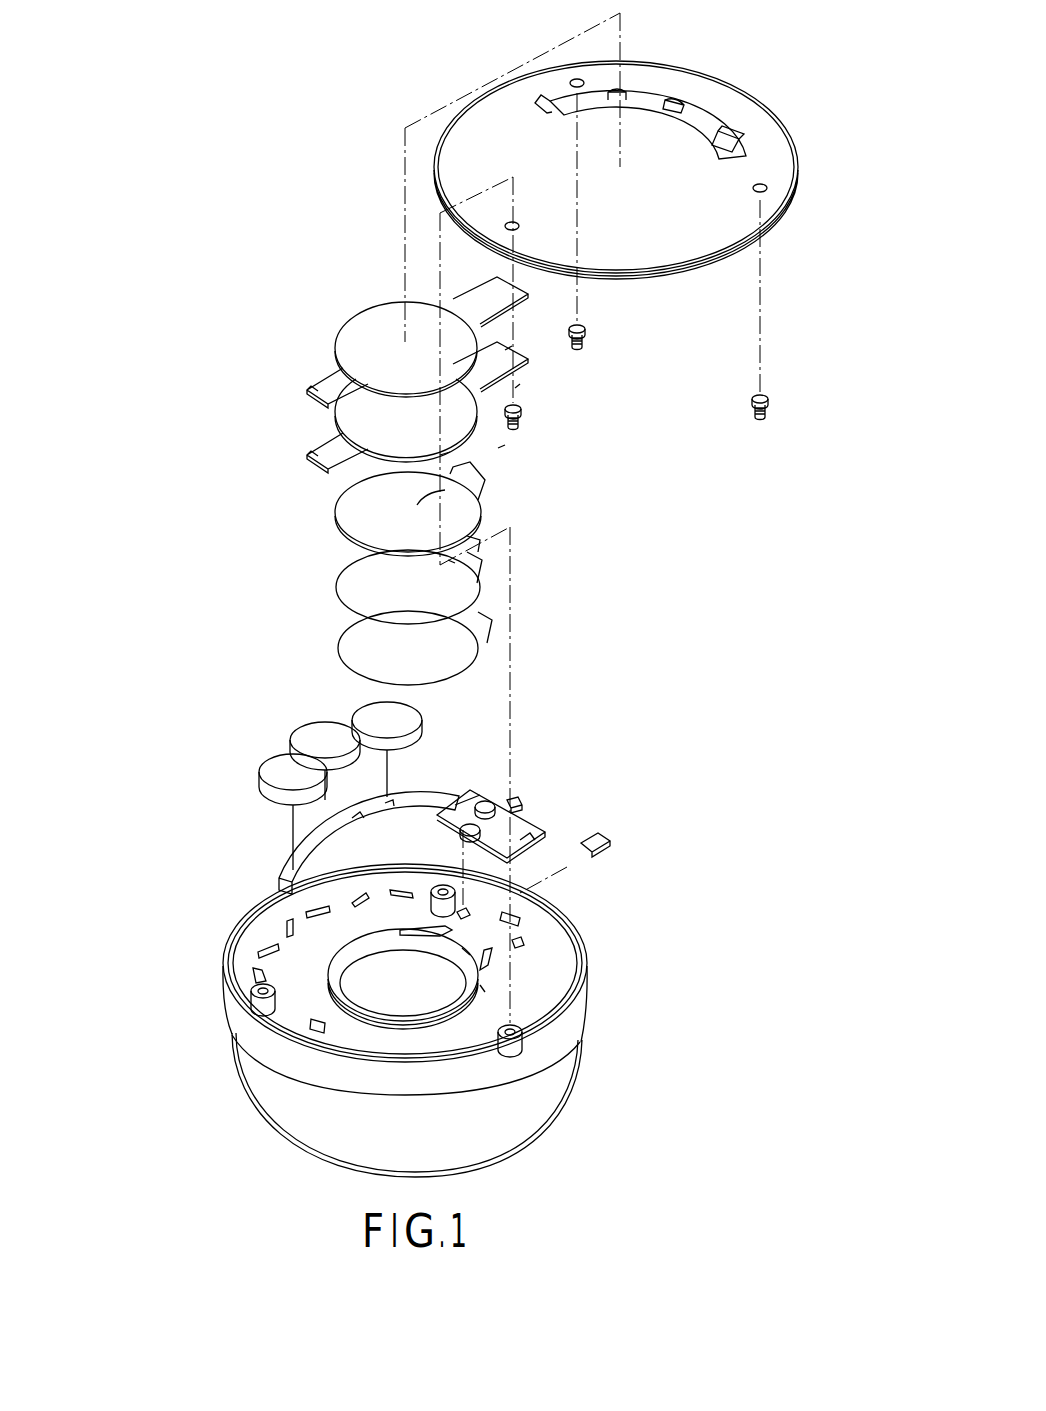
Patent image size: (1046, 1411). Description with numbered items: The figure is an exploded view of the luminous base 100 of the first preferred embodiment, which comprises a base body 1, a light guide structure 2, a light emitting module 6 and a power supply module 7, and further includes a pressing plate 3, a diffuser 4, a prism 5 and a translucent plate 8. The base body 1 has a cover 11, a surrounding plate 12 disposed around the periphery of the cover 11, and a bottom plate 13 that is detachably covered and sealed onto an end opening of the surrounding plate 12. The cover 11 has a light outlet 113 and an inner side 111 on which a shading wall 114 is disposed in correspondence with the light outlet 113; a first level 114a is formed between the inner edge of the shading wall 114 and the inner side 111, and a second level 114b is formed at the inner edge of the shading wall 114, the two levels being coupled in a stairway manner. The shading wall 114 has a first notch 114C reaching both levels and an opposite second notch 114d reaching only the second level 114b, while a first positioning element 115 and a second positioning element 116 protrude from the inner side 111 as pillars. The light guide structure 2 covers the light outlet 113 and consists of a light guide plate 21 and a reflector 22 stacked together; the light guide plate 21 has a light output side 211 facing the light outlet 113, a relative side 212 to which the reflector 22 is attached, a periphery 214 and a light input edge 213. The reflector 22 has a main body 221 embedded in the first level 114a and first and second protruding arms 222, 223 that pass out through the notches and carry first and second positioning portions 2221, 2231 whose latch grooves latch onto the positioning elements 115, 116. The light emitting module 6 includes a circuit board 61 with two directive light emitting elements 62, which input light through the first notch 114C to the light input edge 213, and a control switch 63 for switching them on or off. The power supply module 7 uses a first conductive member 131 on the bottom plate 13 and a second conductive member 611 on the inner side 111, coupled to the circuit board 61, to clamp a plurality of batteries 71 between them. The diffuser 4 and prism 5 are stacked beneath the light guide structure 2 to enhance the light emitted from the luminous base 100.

The luminous base 100 is at (260, 107).
The base body 1 is at (437, 942).
The cover 11 is at (388, 942).
The inner side 111 is at (268, 944).
The light outlet 113 is at (415, 992).
The shading wall 114 is at (420, 1073).
The first level 114a is at (485, 992).
The second level 114b is at (490, 968).
The first notch 114C is at (467, 950).
The second notch 114d is at (310, 1025).
The first positioning element 115 is at (520, 915).
The second positioning element 116 is at (236, 1085).
The surrounding plate 12 is at (376, 1032).
The translucent plate 8 is at (545, 1145).
The bottom plate 13 is at (629, 178).
The first conductive member 131 is at (700, 120).
The light guide structure 2 is at (152, 388).
The light guide plate 21 is at (435, 534).
The light output side 211 is at (455, 563).
The relative side 212 is at (417, 505).
The light input edge 213 is at (477, 477).
The periphery 214 is at (467, 538).
The reflector 22 is at (417, 385).
The main body 221 is at (505, 445).
The first protruding arm 222 is at (515, 388).
The first positioning portion 2221 is at (505, 350).
The second protruding arm 223 is at (450, 452).
The second positioning portion 2231 is at (315, 467).
The pressing plate 3 is at (352, 305).
The diffuser 4 is at (336, 587).
The prism 5 is at (352, 672).
The light emitting module 6 is at (612, 725).
The circuit board 61 is at (537, 826).
The directive light emitting element 62 is at (470, 828).
The control switch 63 is at (515, 805).
The second conductive member 611 is at (283, 843).
The power supply module 7 is at (282, 780).
The batteries 71 is at (268, 772).